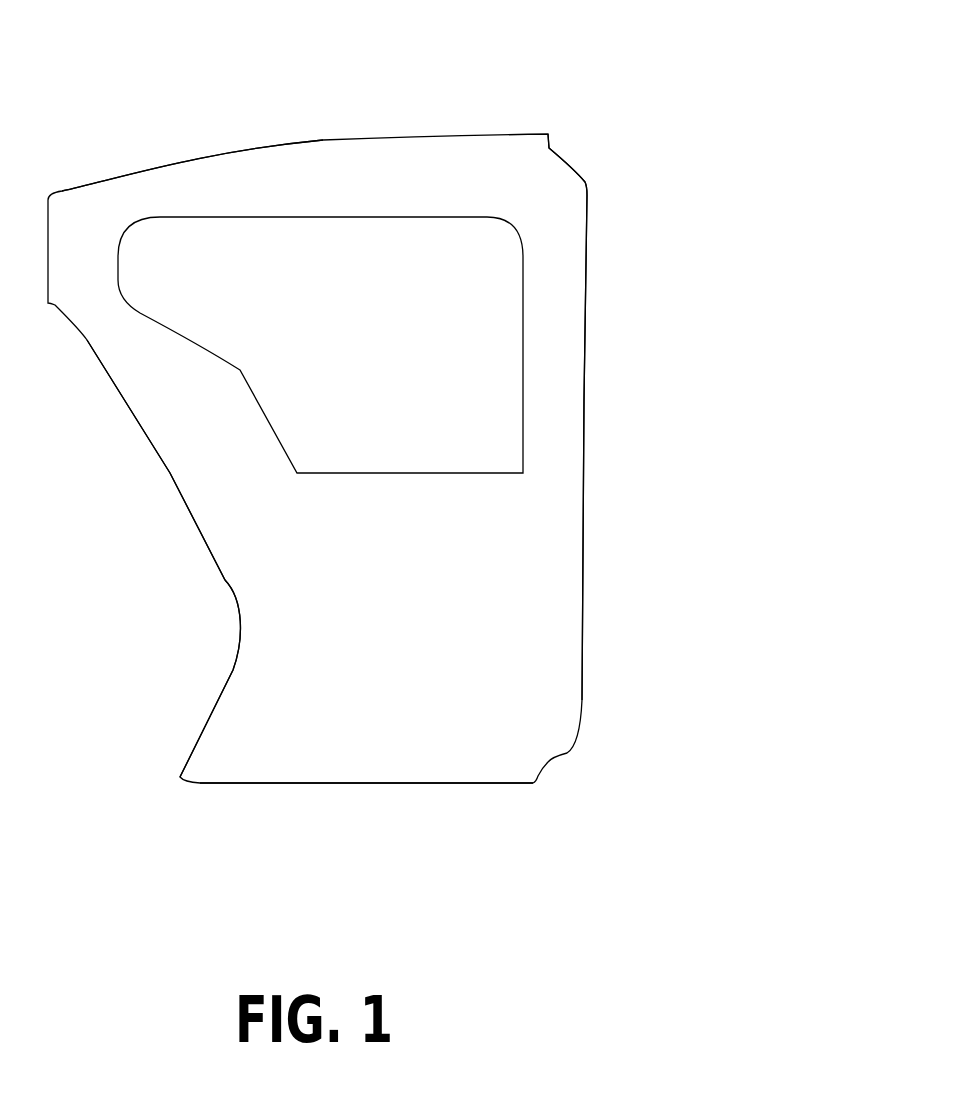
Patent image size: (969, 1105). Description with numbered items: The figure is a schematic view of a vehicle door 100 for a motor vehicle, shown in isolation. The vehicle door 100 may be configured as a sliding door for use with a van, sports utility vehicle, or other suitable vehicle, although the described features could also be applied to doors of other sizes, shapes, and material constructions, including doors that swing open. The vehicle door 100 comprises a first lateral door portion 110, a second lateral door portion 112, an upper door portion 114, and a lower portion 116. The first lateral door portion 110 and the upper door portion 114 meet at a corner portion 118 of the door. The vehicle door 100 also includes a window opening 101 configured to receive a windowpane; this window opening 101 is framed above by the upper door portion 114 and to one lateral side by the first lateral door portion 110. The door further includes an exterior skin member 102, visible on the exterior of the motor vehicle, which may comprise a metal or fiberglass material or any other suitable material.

The vehicle door 100 is at (570, 95).
The window opening 101 is at (380, 215).
The exterior skin member 102 is at (353, 605).
The first lateral door portion 110 is at (560, 385).
The second lateral door portion 112 is at (223, 448).
The upper door portion 114 is at (292, 162).
The lower portion 116 is at (377, 755).
The corner portion 118 is at (537, 177).